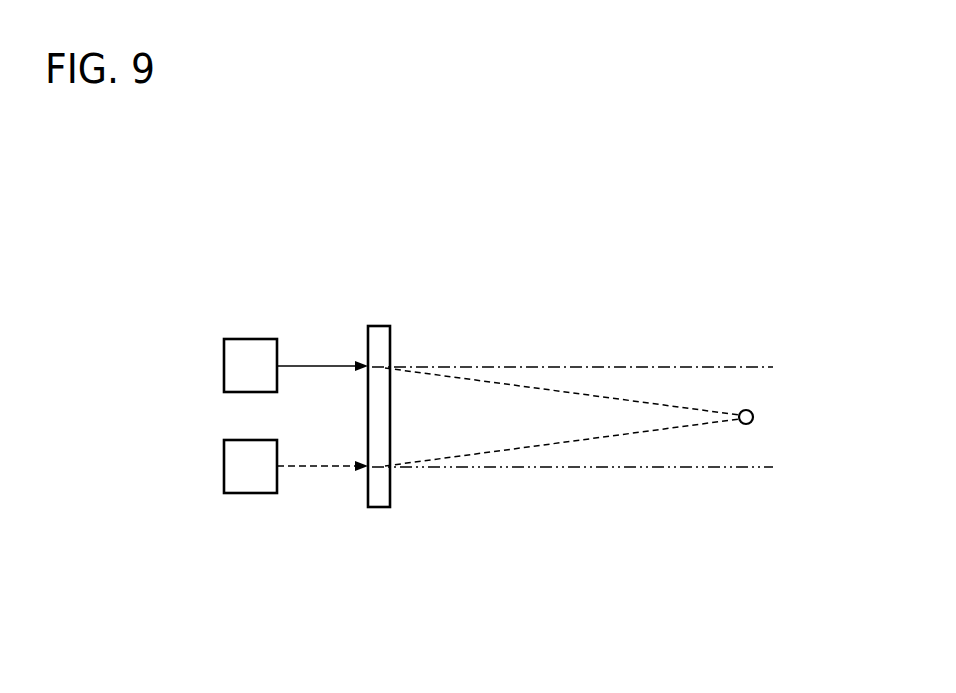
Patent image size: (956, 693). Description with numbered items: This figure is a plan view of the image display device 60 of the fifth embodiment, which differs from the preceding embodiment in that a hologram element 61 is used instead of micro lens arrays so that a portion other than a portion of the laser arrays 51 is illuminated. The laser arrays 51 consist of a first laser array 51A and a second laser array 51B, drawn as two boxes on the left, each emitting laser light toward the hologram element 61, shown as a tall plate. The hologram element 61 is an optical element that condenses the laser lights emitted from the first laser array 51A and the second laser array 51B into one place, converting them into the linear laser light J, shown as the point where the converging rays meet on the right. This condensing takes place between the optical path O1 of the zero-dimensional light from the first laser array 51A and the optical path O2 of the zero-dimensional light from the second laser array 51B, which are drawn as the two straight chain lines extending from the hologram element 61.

The image display device 60 is at (790, 272).
The laser arrays 51 is at (116, 406).
The first laser array 51A is at (223, 367).
The second laser array 51B is at (223, 467).
The hologram element 61 is at (381, 495).
The optical path O1 is at (530, 365).
The optical path O2 is at (514, 470).
The linear laser light J is at (754, 417).